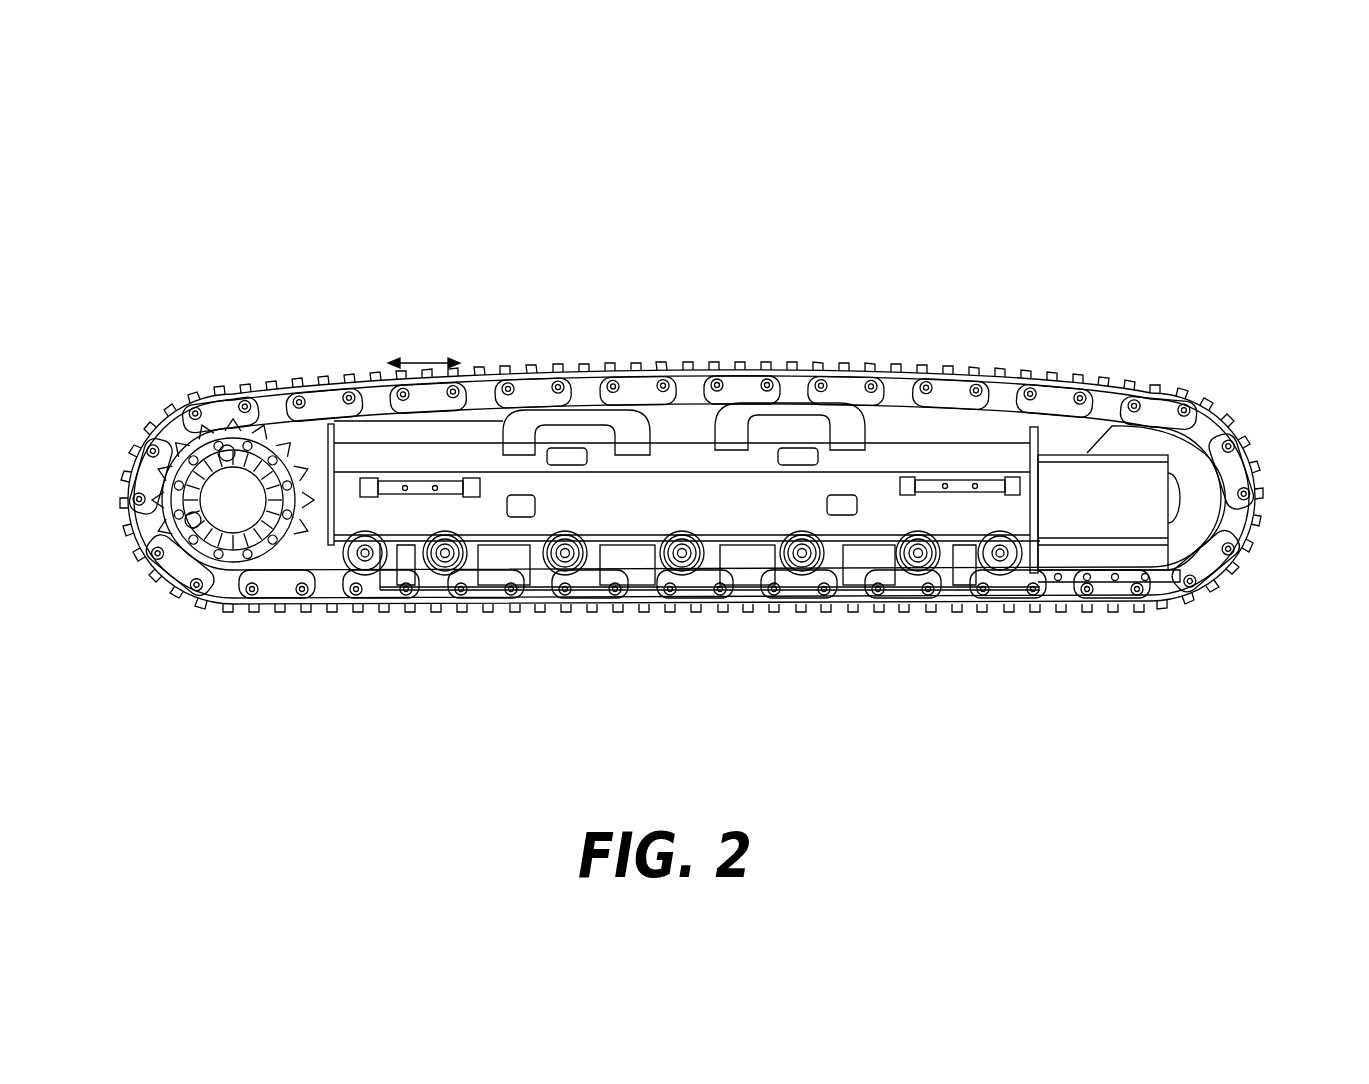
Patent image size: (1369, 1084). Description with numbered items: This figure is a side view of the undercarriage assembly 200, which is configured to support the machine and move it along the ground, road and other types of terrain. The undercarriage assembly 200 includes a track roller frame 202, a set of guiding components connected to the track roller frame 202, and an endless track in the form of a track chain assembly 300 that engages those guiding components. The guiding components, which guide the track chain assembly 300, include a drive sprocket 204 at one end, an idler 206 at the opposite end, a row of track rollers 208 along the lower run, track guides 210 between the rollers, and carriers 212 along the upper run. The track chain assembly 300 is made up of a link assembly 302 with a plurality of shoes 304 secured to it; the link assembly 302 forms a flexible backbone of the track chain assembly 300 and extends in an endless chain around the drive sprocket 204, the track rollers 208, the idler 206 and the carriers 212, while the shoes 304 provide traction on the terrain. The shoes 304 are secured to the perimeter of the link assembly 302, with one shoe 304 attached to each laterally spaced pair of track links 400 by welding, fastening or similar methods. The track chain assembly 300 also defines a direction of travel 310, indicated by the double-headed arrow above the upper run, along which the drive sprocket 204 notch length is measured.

The undercarriage assembly 200 is at (1120, 168).
The track roller frame 202 is at (590, 497).
The drive sprocket 204 is at (233, 498).
The idler 206 is at (1198, 513).
The track rollers 208 is at (370, 563).
The track guides 210 is at (502, 567).
The carriers 212 is at (518, 428).
The track chain assembly 300 is at (637, 612).
The link assembly 302 is at (377, 407).
The shoes 304 is at (697, 365).
The direction of travel 310 is at (425, 358).
The track links 400 is at (228, 413).